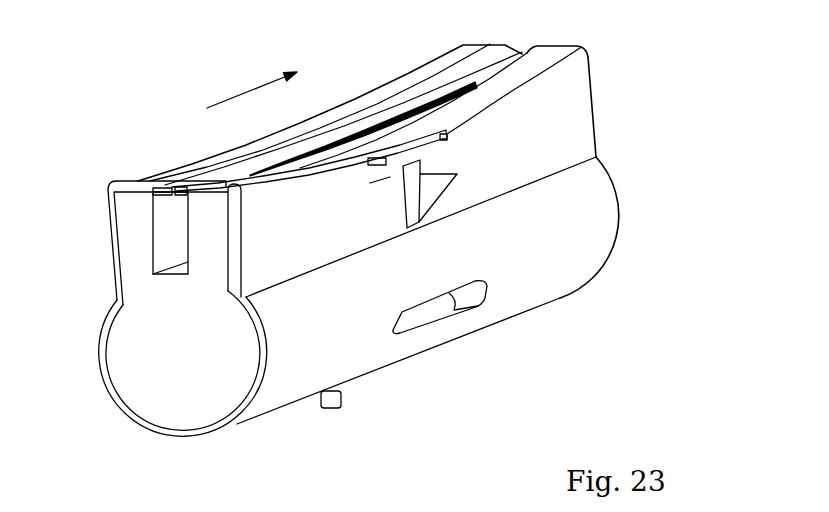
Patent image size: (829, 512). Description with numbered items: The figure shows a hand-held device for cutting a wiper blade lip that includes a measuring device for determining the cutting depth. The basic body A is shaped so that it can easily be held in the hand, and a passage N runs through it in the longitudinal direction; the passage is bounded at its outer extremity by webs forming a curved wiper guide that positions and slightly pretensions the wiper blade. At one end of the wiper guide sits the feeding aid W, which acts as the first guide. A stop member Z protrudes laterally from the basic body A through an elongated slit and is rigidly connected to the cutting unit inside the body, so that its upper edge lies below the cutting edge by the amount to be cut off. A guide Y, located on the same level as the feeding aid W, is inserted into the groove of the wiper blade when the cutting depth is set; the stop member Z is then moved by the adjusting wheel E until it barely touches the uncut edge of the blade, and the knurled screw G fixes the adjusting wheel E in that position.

The basic body A is at (596, 197).
The passage N is at (165, 224).
The feeding aid W is at (161, 175).
The guide Y is at (454, 148).
The stop member Z is at (422, 202).
The adjusting wheel E is at (436, 324).
The screw G is at (359, 412).